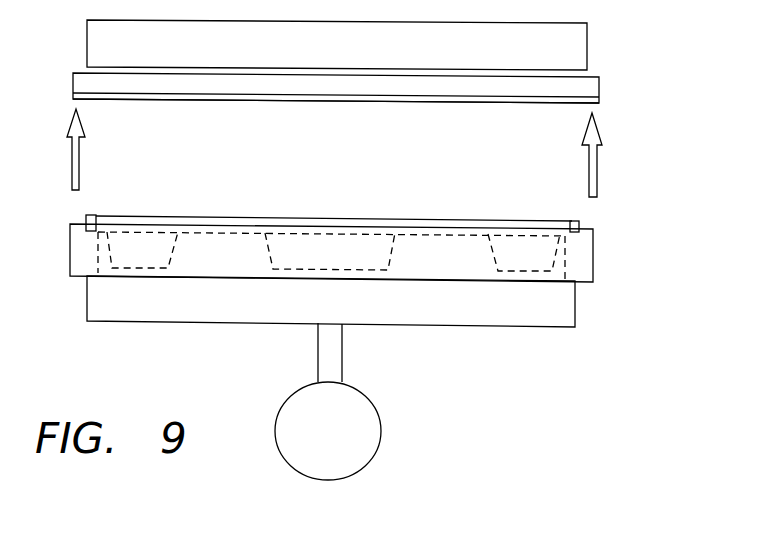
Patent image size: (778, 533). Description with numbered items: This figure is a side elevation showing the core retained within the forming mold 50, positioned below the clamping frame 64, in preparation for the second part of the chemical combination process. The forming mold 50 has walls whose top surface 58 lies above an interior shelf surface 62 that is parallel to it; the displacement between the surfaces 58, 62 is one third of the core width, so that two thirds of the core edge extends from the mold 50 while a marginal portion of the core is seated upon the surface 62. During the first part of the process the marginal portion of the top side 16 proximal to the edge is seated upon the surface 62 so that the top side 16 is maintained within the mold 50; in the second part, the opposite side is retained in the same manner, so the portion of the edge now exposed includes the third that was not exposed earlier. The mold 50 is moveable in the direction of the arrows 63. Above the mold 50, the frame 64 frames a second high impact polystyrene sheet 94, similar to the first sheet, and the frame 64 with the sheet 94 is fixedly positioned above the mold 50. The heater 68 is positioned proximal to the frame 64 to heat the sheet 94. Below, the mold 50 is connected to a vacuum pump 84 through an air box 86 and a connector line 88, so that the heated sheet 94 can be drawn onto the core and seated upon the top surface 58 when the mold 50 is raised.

The heater 68 is at (578, 36).
The frame 64 is at (608, 85).
The second high impact polystyrene sheet 94 is at (490, 103).
The arrows 63 is at (72, 158).
The top side 16 is at (210, 218).
The top surface 58 is at (86, 220).
The surface 62 is at (92, 215).
The forming mold 50 is at (608, 262).
The air box 86 is at (573, 303).
The connector line 88 is at (335, 357).
The vacuum pump 84 is at (368, 403).